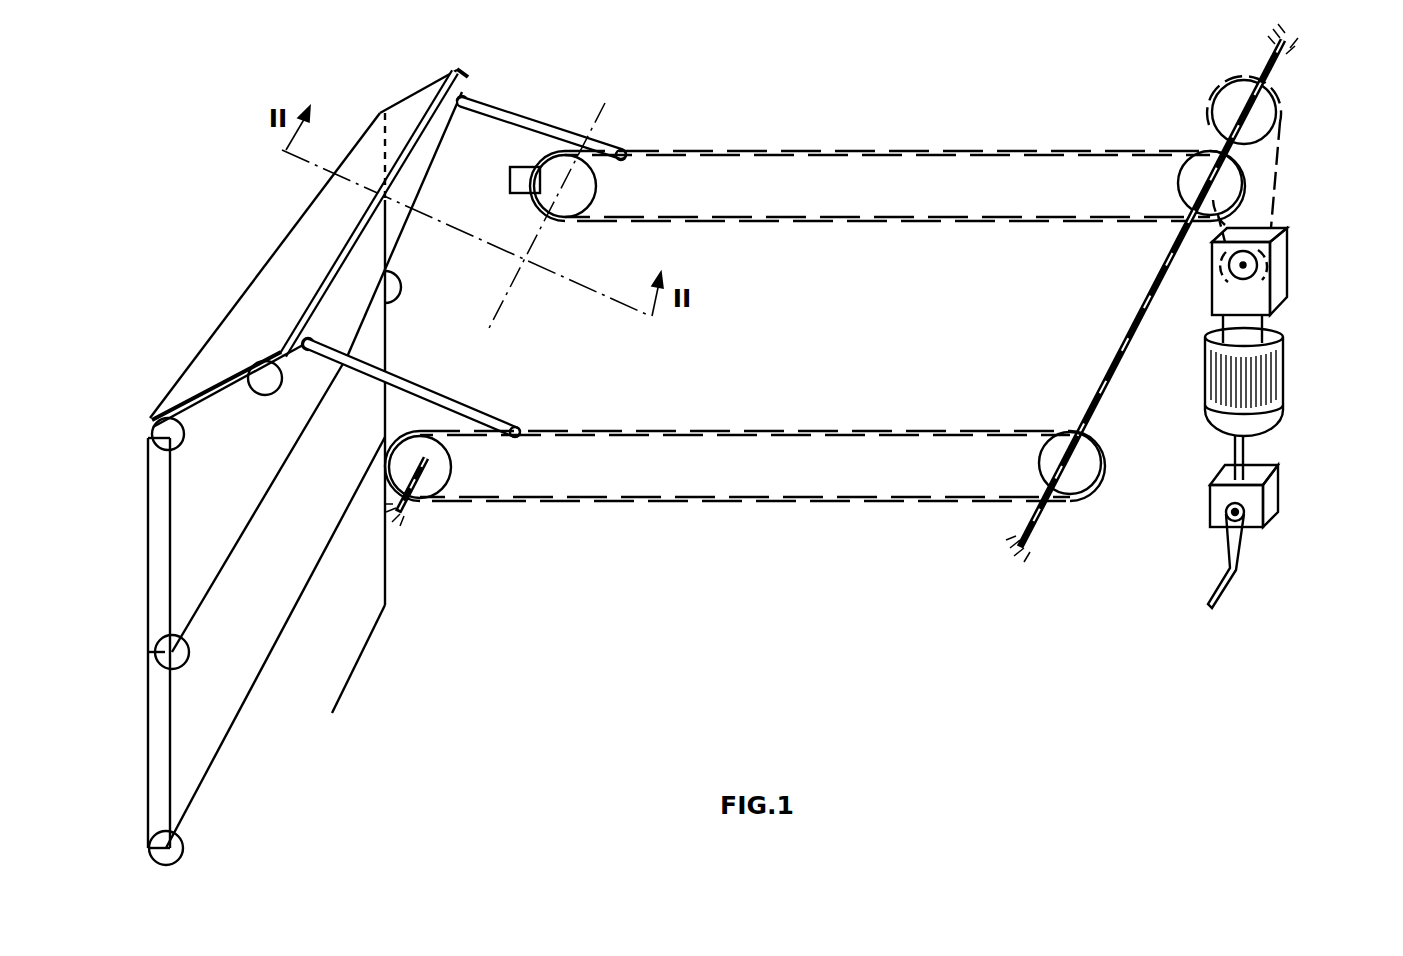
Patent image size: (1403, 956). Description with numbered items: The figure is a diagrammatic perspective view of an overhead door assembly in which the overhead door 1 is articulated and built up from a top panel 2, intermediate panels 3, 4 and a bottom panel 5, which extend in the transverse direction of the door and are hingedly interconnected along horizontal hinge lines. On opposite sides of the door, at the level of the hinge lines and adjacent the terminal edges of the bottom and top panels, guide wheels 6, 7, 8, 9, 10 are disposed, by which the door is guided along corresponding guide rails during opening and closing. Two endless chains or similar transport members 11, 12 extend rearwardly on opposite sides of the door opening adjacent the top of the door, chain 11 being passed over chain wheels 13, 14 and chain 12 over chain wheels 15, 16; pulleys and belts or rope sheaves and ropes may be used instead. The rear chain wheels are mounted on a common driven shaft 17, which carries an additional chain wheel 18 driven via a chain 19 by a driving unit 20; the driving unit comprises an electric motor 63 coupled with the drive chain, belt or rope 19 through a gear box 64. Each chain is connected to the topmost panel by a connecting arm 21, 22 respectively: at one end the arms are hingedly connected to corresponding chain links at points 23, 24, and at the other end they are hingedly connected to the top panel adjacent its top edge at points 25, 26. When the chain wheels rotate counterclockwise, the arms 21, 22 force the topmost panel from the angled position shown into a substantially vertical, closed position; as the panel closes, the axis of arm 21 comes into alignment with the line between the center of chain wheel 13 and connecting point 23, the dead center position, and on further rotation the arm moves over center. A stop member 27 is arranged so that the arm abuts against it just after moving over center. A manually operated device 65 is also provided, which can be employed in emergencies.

The overhead door 1 is at (198, 282).
The top panel 2 is at (326, 254).
The panel 3 is at (255, 459).
The panel 4 is at (275, 619).
The bottom panel 5 is at (308, 689).
The guide wheel 6 is at (274, 392).
The guide wheel 7 is at (180, 446).
The guide wheel 8 is at (186, 642).
The guide wheel 9 is at (184, 843).
The guide wheel 10 is at (402, 284).
The endless chain 11 is at (740, 148).
The endless chain 12 is at (798, 428).
The chain wheel 13 is at (597, 186).
The chain wheel 14 is at (1188, 178).
The chain wheel 15 is at (446, 473).
The chain wheel 16 is at (1054, 455).
The driven shaft 17 is at (1139, 342).
The additional chain wheel 18 is at (1223, 110).
The chain 19 is at (1281, 173).
The driving unit 20 is at (1308, 318).
The connecting arm 21 is at (545, 122).
The connecting arm 22 is at (391, 371).
The hinge connection 23 is at (624, 147).
The hinge connection 24 is at (519, 426).
The hinge connection 25 is at (470, 96).
The hinge connection 26 is at (313, 332).
The stop member 27 is at (510, 182).
The electric motor 63 is at (1284, 378).
The gear box 64 is at (1290, 258).
The manually operated device 65 is at (1182, 552).